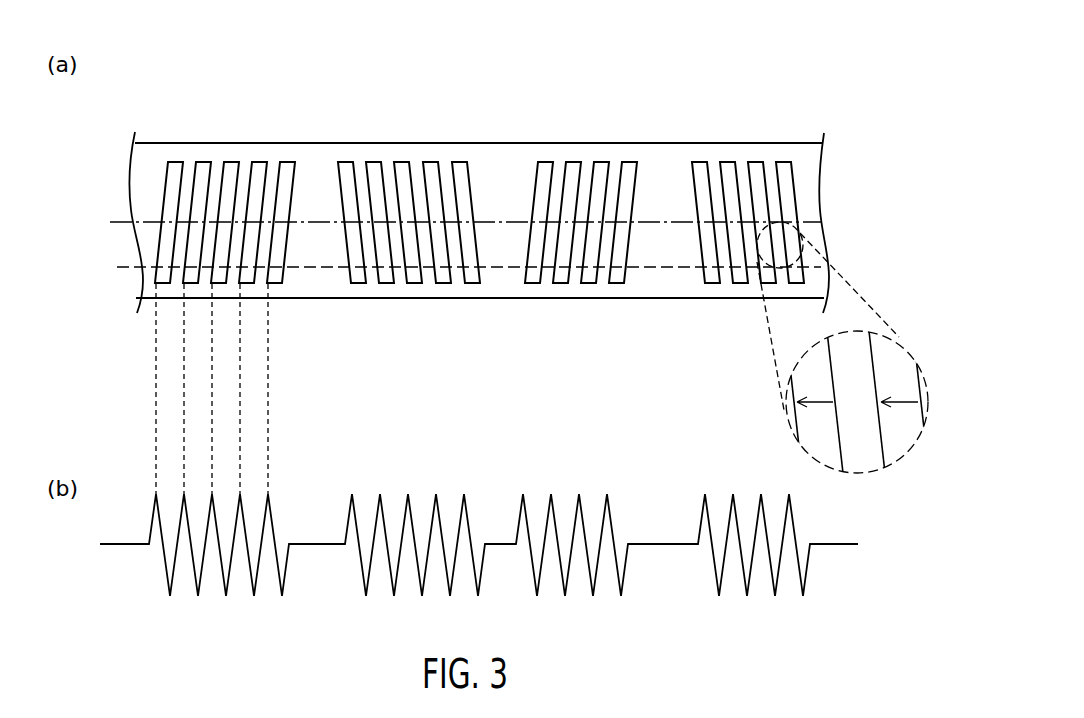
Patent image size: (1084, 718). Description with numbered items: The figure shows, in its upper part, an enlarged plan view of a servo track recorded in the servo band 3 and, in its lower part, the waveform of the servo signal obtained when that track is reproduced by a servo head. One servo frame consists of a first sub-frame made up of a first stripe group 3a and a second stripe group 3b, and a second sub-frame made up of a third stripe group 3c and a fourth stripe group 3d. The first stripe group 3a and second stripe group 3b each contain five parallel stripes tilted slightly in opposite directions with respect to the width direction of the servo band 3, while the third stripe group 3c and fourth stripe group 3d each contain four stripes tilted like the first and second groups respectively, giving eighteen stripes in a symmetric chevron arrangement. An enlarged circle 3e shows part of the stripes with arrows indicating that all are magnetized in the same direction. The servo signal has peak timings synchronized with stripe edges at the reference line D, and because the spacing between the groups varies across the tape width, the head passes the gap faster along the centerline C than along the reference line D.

The servo band 3 is at (807, 202).
The first stripe group 3a is at (298, 136).
The second stripe group 3b is at (467, 136).
The third stripe group 3c is at (642, 136).
The fourth stripe group 3d is at (790, 136).
The enlarged circle 3e is at (793, 418).
The centerline C is at (124, 222).
The reference line D is at (124, 267).